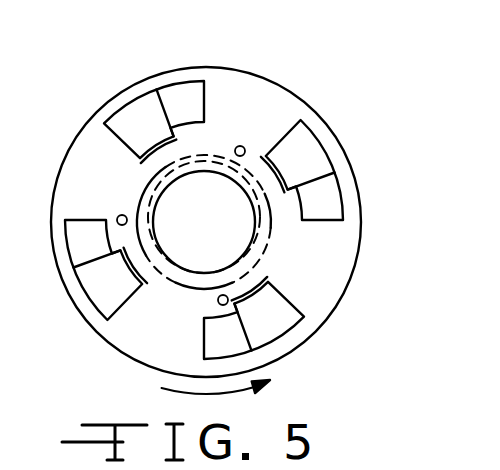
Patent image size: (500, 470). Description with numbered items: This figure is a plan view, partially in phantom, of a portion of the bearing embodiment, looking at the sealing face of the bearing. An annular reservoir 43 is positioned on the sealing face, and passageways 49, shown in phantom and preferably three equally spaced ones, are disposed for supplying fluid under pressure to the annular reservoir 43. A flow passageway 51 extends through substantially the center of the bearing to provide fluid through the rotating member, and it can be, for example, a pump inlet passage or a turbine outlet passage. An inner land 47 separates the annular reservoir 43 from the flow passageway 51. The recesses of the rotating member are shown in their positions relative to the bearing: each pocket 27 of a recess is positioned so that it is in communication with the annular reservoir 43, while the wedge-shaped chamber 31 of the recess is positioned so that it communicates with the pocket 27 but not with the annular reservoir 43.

The pocket 27 is at (300, 156).
The wedge-shaped chamber 31 is at (354, 168).
The annular reservoir 43 is at (160, 292).
The inner land 47 is at (255, 256).
The passageway 49 is at (119, 212).
The flow passageway 51 is at (207, 196).